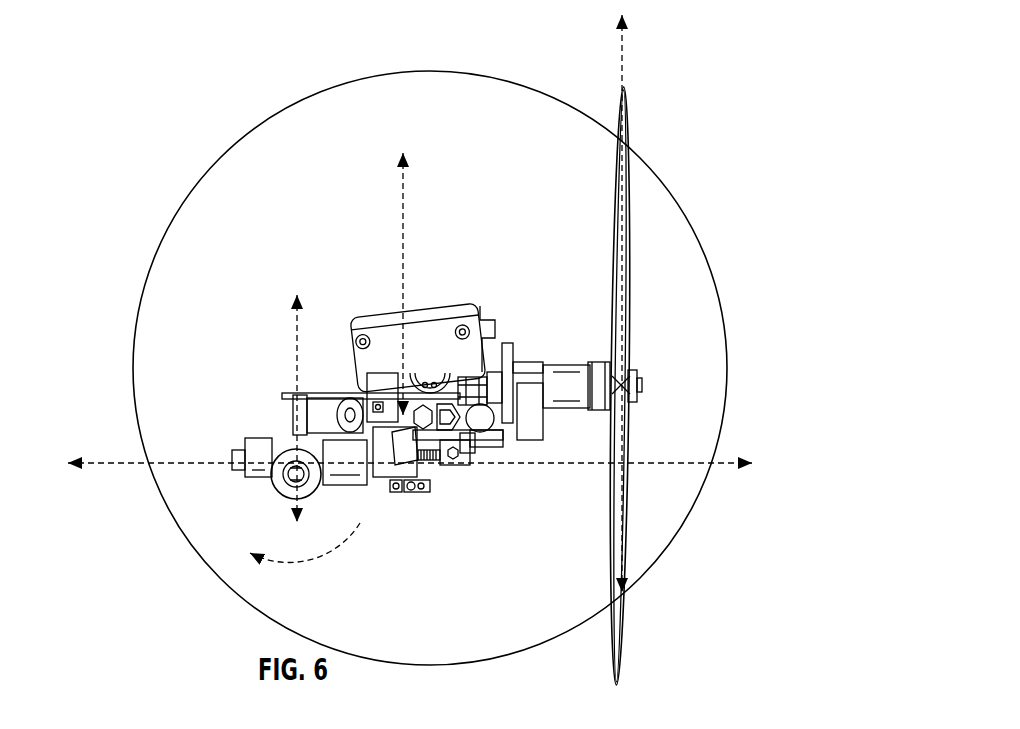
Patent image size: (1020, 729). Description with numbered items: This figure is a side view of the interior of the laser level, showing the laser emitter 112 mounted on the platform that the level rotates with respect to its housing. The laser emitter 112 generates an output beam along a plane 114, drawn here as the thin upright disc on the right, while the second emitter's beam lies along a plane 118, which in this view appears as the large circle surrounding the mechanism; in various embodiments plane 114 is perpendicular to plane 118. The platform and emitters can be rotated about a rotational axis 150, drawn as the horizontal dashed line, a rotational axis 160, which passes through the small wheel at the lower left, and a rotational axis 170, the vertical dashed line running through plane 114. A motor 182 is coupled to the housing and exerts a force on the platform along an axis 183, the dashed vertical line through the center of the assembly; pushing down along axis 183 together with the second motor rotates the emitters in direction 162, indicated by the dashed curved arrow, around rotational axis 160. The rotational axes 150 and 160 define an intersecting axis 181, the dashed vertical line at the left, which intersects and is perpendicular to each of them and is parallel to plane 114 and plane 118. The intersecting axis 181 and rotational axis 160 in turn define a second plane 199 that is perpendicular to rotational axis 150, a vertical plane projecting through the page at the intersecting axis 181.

The laser emitter 112 is at (580, 371).
The plane 114 is at (632, 667).
The plane 118 is at (513, 659).
The rotational axis 150 is at (122, 475).
The rotational axis 160 is at (288, 480).
The direction 162 is at (288, 575).
The rotational axis 170 is at (641, 57).
The intersecting axis 181 is at (294, 337).
The motor 182 is at (407, 454).
The axis 183 is at (387, 249).
The second plane 199 is at (281, 365).